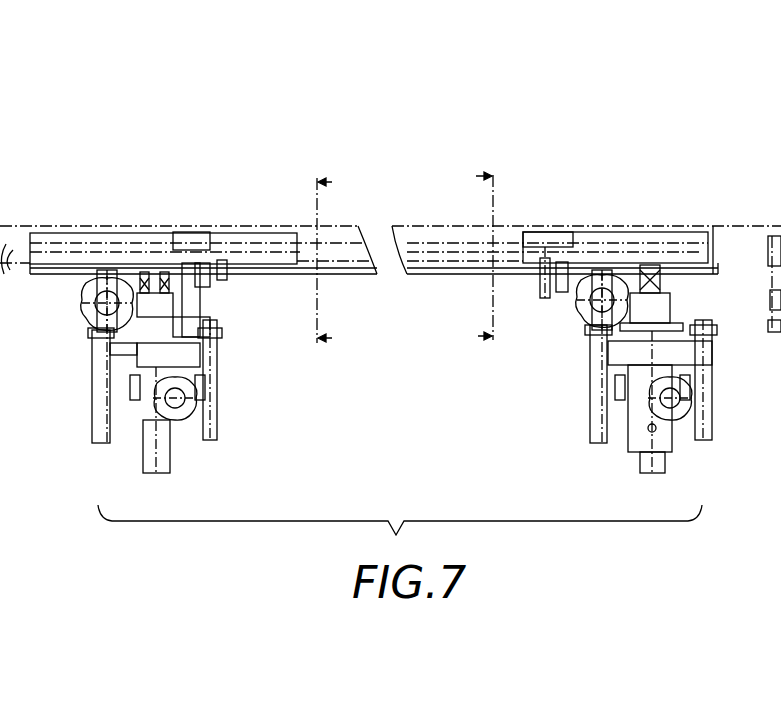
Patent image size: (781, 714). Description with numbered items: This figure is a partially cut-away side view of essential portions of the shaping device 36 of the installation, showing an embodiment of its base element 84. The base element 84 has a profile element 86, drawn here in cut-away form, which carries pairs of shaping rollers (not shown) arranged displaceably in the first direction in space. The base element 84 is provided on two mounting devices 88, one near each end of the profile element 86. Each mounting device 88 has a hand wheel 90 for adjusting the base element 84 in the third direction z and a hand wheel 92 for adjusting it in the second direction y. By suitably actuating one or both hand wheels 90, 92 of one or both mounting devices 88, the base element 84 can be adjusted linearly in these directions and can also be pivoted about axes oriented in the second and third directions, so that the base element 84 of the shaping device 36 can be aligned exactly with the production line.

The shaping device 36 is at (397, 134).
The base element 84 is at (143, 227).
The profile element 86 is at (22, 235).
The mounting device 88 is at (70, 331).
The hand wheel 90 is at (220, 400).
The hand wheel 92 is at (82, 302).